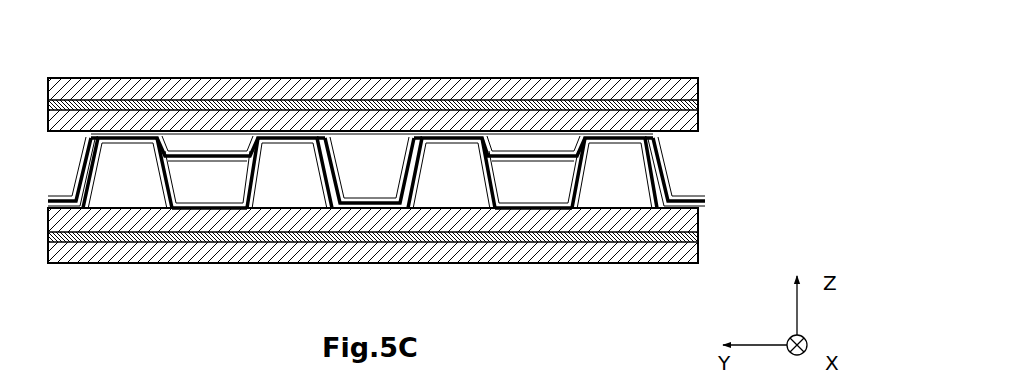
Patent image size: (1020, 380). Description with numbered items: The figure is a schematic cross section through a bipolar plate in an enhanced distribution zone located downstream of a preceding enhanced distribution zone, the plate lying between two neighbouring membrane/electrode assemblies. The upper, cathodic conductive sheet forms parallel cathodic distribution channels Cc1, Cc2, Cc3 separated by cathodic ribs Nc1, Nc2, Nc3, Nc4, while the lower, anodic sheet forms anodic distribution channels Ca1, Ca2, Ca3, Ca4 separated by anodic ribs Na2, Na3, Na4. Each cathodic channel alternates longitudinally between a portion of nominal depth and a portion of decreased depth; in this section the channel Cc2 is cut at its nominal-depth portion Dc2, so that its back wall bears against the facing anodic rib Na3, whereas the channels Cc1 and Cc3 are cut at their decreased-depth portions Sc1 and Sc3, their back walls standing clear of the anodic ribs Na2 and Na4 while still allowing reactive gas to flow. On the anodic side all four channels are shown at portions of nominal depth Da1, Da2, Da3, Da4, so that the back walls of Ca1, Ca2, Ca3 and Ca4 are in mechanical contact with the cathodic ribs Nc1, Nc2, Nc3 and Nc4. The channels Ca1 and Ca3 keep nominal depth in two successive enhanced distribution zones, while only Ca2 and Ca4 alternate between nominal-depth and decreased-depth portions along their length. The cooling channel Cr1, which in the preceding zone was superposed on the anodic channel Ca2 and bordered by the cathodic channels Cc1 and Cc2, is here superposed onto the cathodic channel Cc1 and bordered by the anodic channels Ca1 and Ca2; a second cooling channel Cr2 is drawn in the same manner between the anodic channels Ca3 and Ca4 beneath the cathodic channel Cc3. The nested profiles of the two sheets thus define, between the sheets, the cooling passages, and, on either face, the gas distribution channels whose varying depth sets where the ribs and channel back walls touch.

The cathodic rib Nc1 is at (127, 131).
The cathodic rib Nc2 is at (298, 131).
The cathodic rib Nc3 is at (457, 131).
The cathodic rib Nc4 is at (613, 131).
The portion of decreased depth of cathodic channel Sc1 is at (232, 150).
The portion of decreased depth of cathodic channel Sc3 is at (562, 146).
The portion of nominal depth of cathodic channel Dc2 is at (402, 145).
The cathodic distribution channel Cc1 is at (207, 147).
The cathodic distribution channel Cc2 is at (369, 170).
The cathodic distribution channel Cc3 is at (533, 147).
The cooling channel Cr1 is at (207, 179).
The second central cavity Cr2 is at (533, 179).
The anodic distribution channel Ca1 is at (127, 174).
The anodic distribution channel Ca2 is at (289, 174).
The anodic distribution channel Ca3 is at (451, 174).
The anodic distribution channel Ca4 is at (614, 174).
The portion of nominal depth of anodic channel Da1 is at (96, 204).
The portion of nominal depth of anodic channel Da2 is at (261, 208).
The portion of nominal depth of anodic channel Da3 is at (423, 208).
The portion of nominal depth of anodic channel Da4 is at (587, 208).
The anodic rib Na2 is at (205, 210).
The anodic rib Na3 is at (378, 210).
The anodic rib Na4 is at (538, 210).